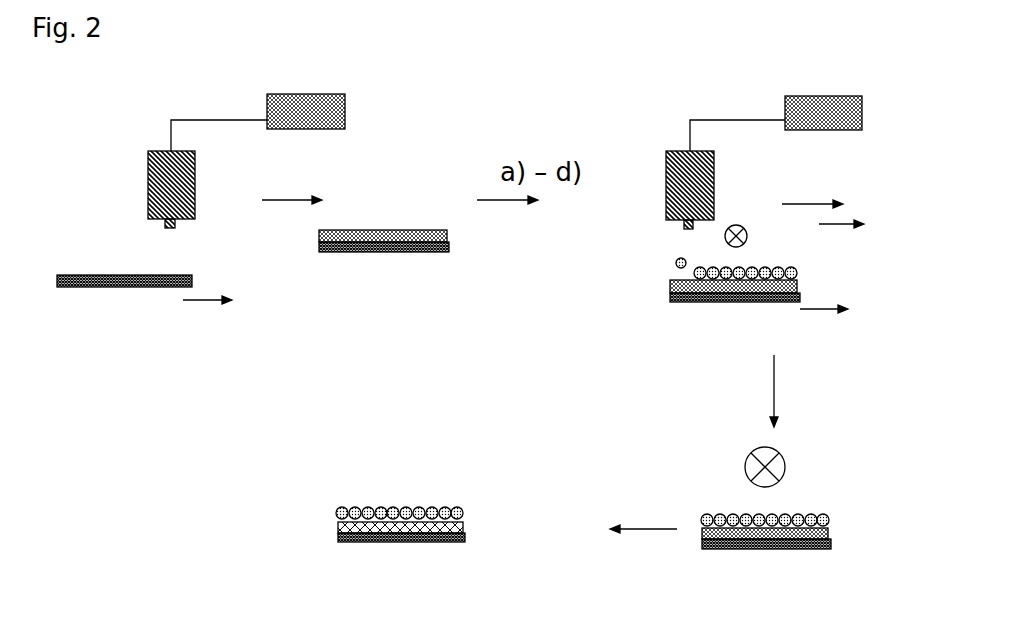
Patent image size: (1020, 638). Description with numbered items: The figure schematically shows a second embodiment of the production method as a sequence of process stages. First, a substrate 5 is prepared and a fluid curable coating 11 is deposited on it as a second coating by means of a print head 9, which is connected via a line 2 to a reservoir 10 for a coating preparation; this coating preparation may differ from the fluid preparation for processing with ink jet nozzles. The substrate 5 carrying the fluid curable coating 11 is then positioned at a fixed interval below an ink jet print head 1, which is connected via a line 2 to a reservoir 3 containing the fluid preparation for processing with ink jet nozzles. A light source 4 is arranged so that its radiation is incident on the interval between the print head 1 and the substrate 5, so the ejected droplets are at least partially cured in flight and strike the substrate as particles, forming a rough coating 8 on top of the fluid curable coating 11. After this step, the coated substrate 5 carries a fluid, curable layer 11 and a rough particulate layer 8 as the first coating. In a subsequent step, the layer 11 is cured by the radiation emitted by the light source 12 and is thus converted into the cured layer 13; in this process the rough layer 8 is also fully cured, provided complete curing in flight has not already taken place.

The ink jet print head 1 is at (666, 186).
The line 2 is at (205, 115).
The reservoir 3 is at (862, 100).
The light source 4 is at (733, 216).
The substrate 5 is at (122, 287).
The rough coating 8 is at (797, 270).
The print head 9 is at (145, 185).
The reservoir 10 is at (345, 99).
The fluid curable coating 11 is at (447, 236).
The light source 12 is at (781, 455).
The cured layer 13 is at (463, 527).